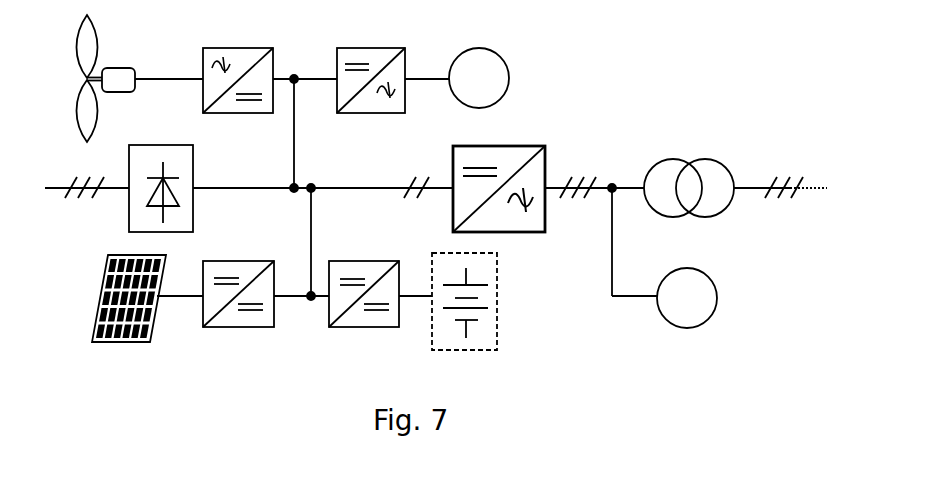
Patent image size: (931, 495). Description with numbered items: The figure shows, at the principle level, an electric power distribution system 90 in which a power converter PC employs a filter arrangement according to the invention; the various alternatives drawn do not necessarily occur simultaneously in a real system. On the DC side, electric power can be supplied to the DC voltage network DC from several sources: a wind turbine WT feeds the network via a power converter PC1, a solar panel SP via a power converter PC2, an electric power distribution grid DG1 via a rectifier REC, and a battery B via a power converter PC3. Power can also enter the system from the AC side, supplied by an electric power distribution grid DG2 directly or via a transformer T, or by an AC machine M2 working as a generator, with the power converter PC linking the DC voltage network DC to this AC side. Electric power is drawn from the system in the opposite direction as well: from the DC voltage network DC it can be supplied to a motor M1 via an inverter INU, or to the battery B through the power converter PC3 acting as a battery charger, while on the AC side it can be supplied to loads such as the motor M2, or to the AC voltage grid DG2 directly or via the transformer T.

The hybrid power system 90 is at (586, 48).
The wind turbine WT is at (110, 78).
The power converter PC1 is at (238, 67).
The inverter INU is at (371, 67).
The motor M1 is at (479, 78).
The electric power distribution grid DG1 is at (77, 179).
The rectifier REC is at (161, 176).
The DC voltage network DC is at (335, 173).
The power converter PC is at (499, 174).
The transformer T is at (689, 175).
The electric power distribution grid DG2 is at (795, 180).
The AC machine M2 is at (687, 298).
The solar panel SP is at (114, 298).
The power converter PC2 is at (238, 281).
The power converter PC3 is at (364, 281).
The battery B is at (480, 301).